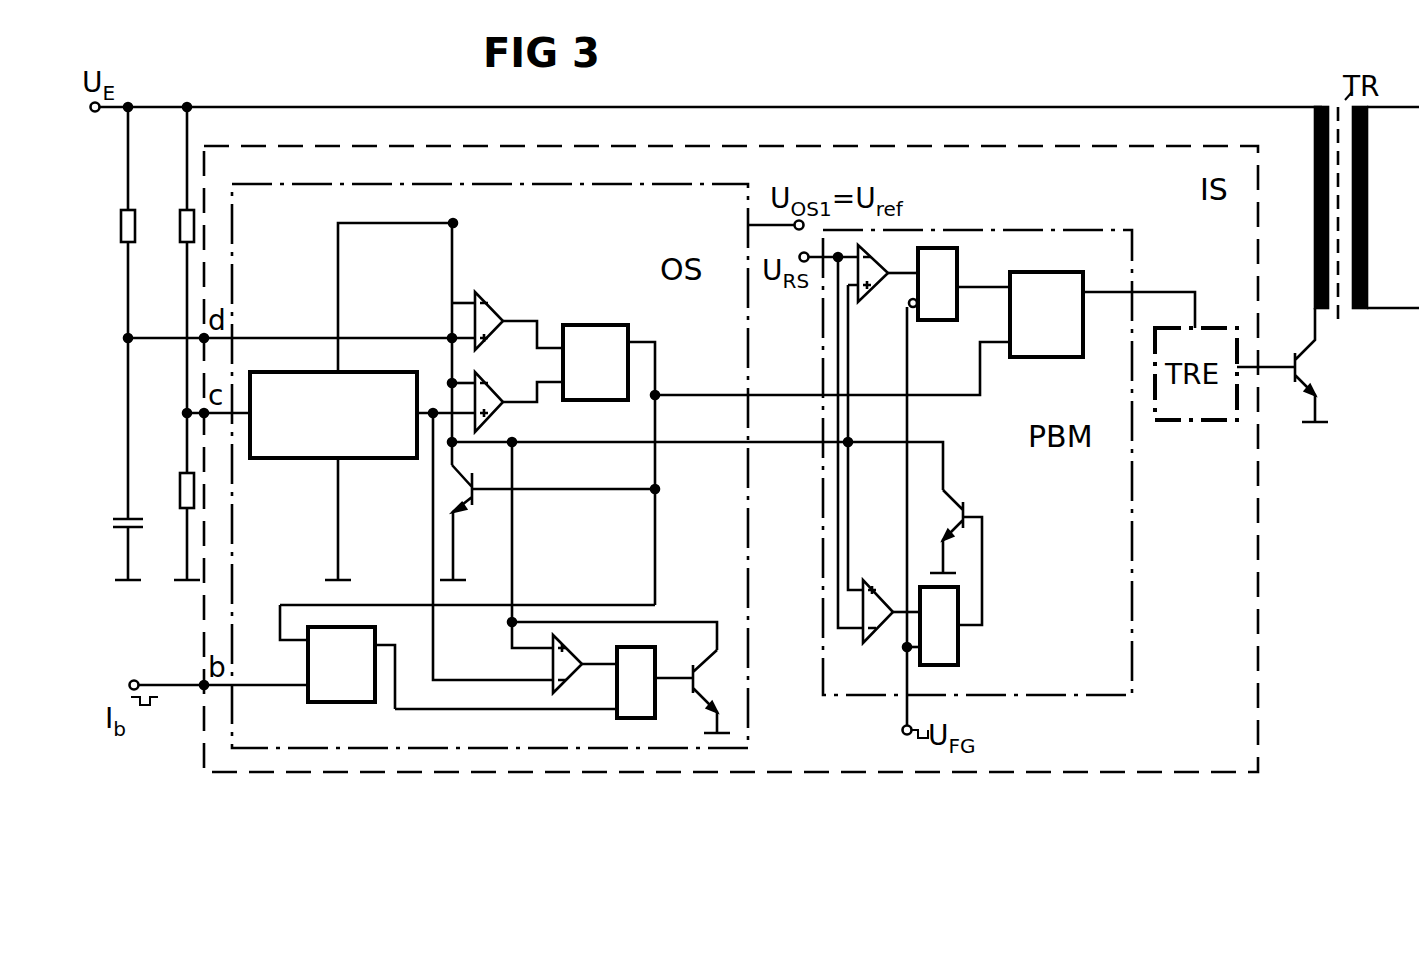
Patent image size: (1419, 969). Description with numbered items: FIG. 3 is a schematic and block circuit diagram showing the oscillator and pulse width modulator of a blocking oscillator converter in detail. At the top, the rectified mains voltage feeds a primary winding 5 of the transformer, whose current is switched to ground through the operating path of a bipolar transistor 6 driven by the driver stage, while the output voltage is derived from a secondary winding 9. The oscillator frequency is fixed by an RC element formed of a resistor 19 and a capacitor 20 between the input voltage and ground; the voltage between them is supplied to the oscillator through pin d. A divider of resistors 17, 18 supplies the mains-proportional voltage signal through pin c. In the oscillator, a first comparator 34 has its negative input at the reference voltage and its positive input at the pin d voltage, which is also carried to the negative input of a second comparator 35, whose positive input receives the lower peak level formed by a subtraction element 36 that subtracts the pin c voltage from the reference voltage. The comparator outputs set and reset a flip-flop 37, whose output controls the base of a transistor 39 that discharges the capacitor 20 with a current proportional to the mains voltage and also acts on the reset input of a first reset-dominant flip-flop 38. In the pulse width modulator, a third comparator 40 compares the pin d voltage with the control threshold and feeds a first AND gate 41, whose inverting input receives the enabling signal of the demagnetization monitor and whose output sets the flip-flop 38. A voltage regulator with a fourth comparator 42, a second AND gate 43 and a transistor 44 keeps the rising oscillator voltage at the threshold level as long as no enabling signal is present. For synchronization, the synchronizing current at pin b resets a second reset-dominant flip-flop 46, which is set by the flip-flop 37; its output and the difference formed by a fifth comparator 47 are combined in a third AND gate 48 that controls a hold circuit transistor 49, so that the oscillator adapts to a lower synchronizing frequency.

The primary winding 5 is at (1315, 215).
The bipolar transistor 6 is at (1313, 365).
The secondary winding 9 is at (1376, 165).
The resistor 17 is at (174, 260).
The resistor 18 is at (176, 496).
The resistor 19 is at (116, 222).
The capacitor 20 is at (118, 459).
The first comparator 34 is at (507, 317).
The second comparator 35 is at (507, 406).
The subtraction element 36 is at (370, 460).
The flip-flop 37 is at (594, 340).
The first reset-dominant flip-flop 38 is at (1102, 315).
The transistor 39 is at (547, 522).
The third comparator 40 is at (876, 295).
The first AND gate 41 is at (968, 262).
The fourth comparator 42 is at (872, 604).
The second AND gate 43 is at (950, 647).
The transistor 44 is at (936, 531).
The second reset-dominant flip-flop 46 is at (355, 690).
The fifth comparator 47 is at (585, 660).
The third AND gate 48 is at (648, 709).
The transistor 49 is at (702, 681).